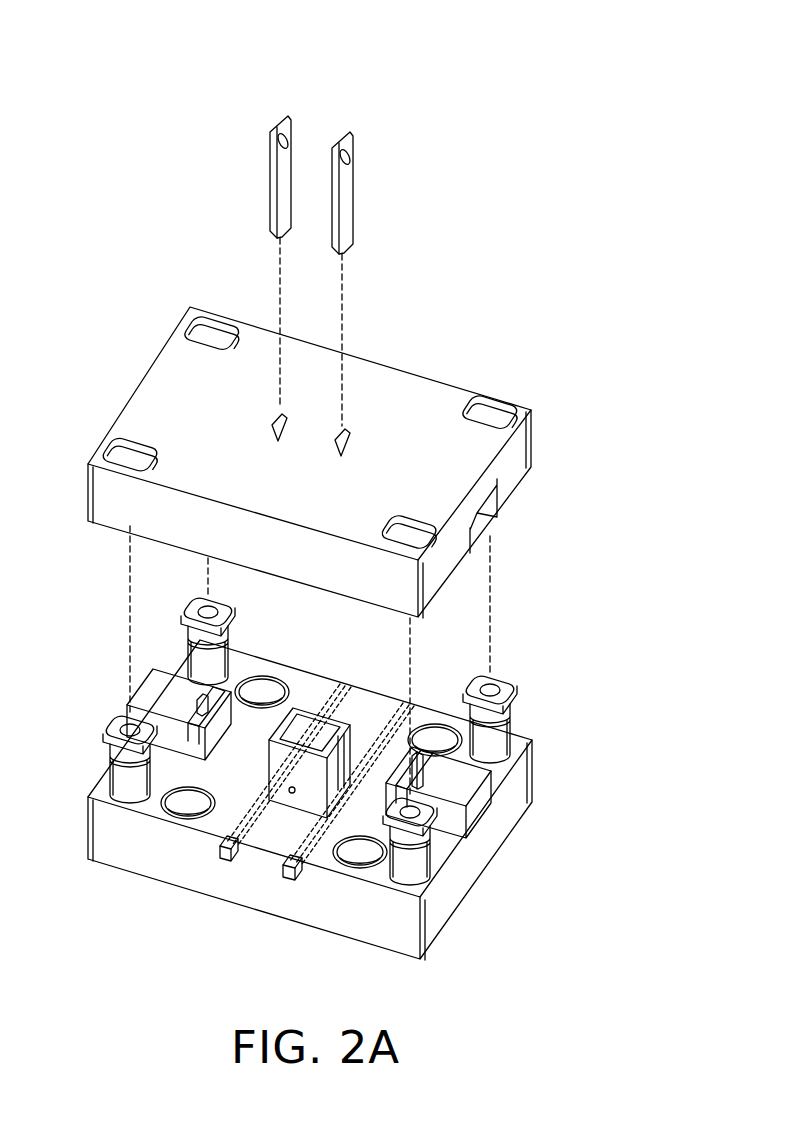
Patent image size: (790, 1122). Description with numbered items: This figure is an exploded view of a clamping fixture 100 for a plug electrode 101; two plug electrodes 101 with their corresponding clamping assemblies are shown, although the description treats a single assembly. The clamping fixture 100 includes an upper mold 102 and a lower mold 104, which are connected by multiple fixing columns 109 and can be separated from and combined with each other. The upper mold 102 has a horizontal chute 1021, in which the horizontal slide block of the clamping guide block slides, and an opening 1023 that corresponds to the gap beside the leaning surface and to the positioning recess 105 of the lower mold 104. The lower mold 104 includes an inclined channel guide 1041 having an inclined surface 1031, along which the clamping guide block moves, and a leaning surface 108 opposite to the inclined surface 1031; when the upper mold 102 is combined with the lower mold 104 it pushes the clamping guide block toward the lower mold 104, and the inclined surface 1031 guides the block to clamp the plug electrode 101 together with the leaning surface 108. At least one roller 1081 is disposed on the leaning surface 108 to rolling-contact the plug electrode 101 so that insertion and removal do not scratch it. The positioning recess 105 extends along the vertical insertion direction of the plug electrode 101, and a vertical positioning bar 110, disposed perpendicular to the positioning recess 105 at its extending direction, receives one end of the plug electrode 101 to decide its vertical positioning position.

The clamping fixture 100 is at (102, 30).
The plug electrode 101 is at (288, 116).
The upper mold 102 is at (440, 368).
The horizontal chute 1021 is at (486, 524).
The opening 1023 is at (282, 416).
The lower mold 104 is at (534, 745).
The inclined channel guide 1041 is at (440, 774).
The positioning recess 105 is at (416, 754).
The leaning surface 108 is at (356, 780).
The roller 1081 is at (283, 727).
The fixing column 109 is at (512, 720).
The vertical positioning bar 110 is at (225, 862).
The inclined surface 1031 is at (400, 768).